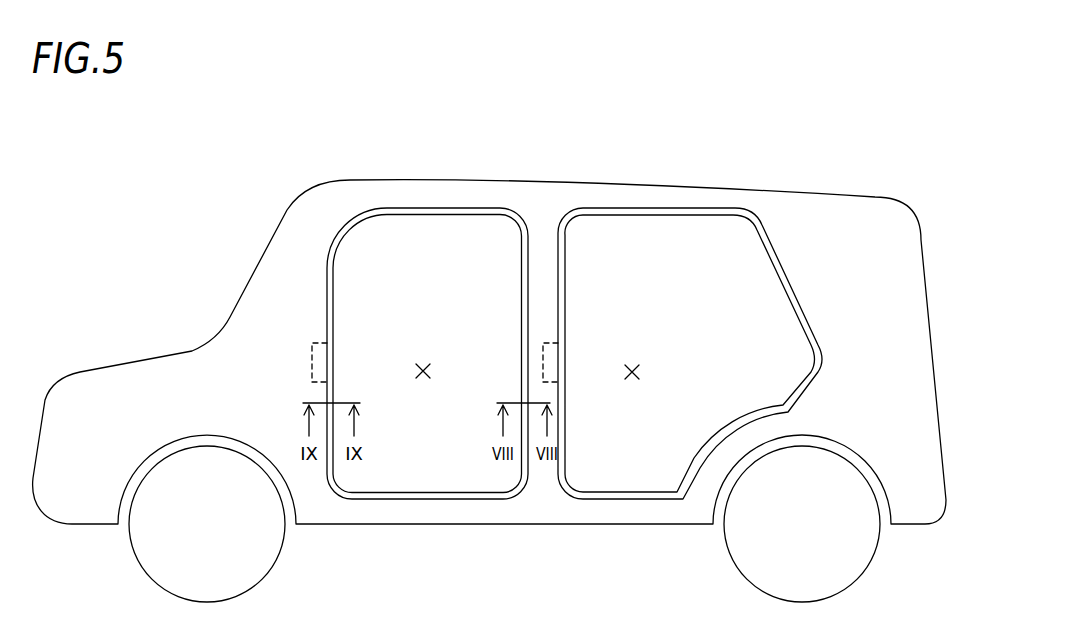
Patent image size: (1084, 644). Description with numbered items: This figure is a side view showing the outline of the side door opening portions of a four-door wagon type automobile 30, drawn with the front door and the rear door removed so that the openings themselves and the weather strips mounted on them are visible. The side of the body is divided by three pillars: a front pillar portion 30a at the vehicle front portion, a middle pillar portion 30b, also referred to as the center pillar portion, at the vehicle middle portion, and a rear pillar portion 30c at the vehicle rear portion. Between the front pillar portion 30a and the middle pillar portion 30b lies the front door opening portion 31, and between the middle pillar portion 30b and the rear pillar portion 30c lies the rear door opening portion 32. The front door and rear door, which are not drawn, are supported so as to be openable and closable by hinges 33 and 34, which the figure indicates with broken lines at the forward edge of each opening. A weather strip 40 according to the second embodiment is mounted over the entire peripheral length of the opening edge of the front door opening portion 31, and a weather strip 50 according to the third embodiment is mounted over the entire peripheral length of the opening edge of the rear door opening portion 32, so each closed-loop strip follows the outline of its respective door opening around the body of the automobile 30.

The automobile 30 is at (172, 182).
The front pillar portion 30a is at (308, 293).
The middle pillar portion 30b is at (541, 244).
The rear pillar portion 30c is at (815, 290).
The front door opening portion 31 is at (421, 385).
The rear door opening portion 32 is at (634, 385).
The hinge 33 is at (312, 362).
The hinge 34 is at (543, 362).
The weather strip 40 is at (418, 214).
The weather strip 50 is at (668, 213).